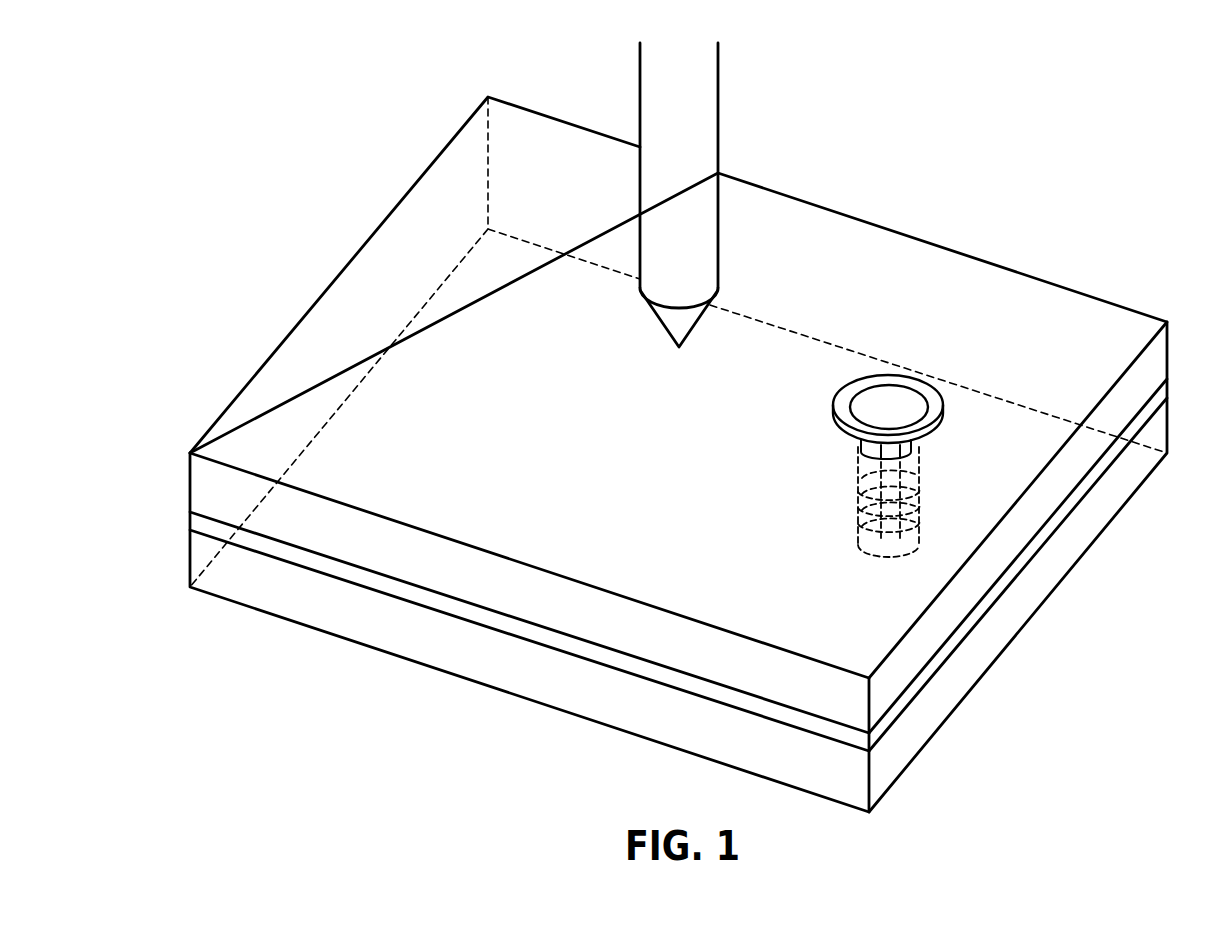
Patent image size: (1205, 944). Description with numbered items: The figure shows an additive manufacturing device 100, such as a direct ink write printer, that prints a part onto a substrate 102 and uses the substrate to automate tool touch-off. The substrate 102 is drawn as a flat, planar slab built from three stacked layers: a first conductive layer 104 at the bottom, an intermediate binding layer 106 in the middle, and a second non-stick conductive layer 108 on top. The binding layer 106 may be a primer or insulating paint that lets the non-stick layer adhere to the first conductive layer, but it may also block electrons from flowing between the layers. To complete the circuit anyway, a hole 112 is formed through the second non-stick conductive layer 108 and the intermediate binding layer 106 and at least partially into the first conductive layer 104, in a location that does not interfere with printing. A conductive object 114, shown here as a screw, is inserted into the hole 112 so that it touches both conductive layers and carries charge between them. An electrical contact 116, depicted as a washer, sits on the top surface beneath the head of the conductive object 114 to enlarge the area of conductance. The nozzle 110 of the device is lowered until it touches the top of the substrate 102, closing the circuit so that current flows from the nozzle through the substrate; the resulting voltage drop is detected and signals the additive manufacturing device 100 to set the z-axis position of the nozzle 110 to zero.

The additive manufacturing device 100 is at (981, 63).
The substrate 102 is at (78, 525).
The first conductive layer 104 is at (190, 553).
The intermediate binding layer 106 is at (190, 522).
The second non-stick conductive layer 108 is at (190, 478).
The nozzle 110 is at (702, 90).
The hole 112 is at (858, 477).
The conductive object 114 is at (912, 400).
The electrical contact 116 is at (938, 408).